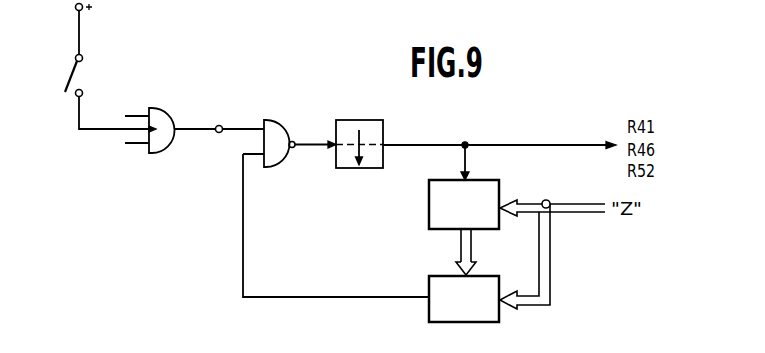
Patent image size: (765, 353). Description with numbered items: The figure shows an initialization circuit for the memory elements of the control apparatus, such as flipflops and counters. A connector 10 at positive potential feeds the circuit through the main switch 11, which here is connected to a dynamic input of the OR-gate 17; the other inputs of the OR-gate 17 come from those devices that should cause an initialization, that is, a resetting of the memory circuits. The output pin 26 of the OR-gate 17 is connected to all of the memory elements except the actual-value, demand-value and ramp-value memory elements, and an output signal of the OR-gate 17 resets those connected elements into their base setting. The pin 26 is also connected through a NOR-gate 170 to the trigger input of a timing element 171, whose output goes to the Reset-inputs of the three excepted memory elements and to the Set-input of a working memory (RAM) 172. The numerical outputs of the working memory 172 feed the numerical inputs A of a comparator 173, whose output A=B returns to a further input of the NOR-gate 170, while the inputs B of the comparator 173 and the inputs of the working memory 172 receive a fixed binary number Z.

The connector 10 is at (75, 8).
The main switch 11 is at (80, 72).
The OR-gate 17 is at (158, 113).
The output pin 26 is at (219, 126).
The NOR-gate 170 is at (273, 125).
The timing element 171 is at (365, 132).
The working memory (RAM) 172 is at (438, 202).
The comparator 173 is at (440, 287).